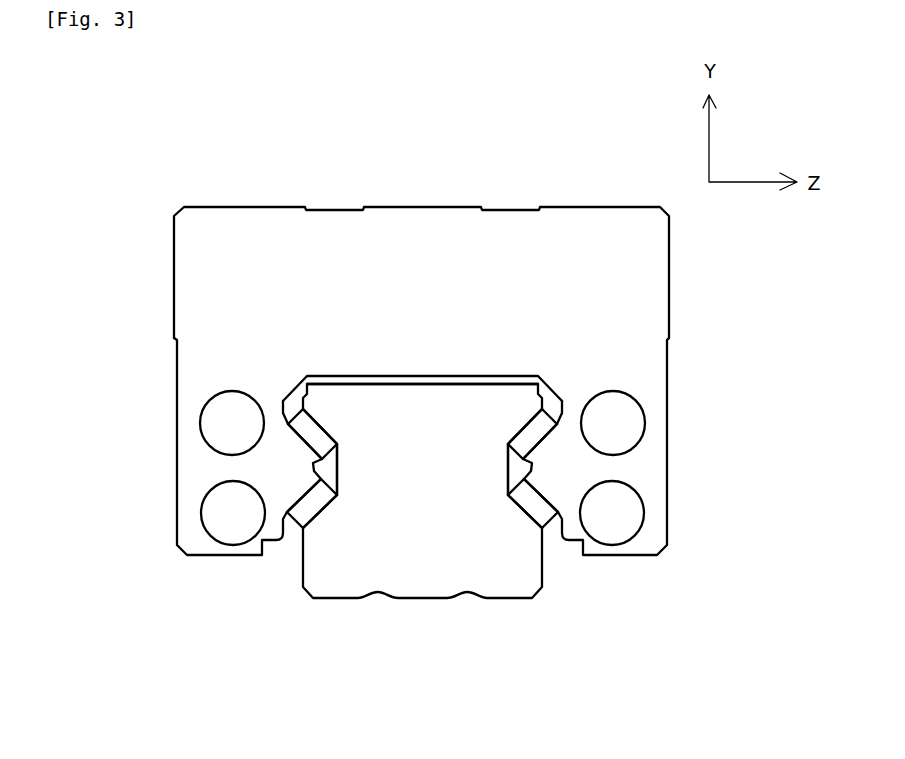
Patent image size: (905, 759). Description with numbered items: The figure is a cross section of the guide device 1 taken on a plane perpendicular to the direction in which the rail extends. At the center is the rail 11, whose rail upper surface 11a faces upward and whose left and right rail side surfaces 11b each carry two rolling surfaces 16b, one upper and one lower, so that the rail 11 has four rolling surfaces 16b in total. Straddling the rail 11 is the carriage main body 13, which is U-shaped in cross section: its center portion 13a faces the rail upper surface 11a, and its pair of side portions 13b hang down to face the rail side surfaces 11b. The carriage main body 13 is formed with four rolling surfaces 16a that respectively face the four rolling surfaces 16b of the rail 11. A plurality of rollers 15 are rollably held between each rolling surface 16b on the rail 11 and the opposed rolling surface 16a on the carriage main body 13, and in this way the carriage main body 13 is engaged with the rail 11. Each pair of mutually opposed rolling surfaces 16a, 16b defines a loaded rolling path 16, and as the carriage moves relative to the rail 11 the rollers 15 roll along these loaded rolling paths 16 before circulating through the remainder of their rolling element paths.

The guide device 1 is at (151, 169).
The rail 11 is at (427, 555).
The rail upper surface 11a is at (413, 383).
The rail side surfaces 11b is at (343, 457).
The carriage main body 13 is at (758, 250).
The center portion 13a is at (500, 270).
The side portions 13b is at (653, 467).
The rollers 15 is at (320, 502).
The loaded rolling paths 16 is at (352, 695).
The rolling surfaces 16a is at (300, 443).
The rolling surfaces 16b is at (320, 440).